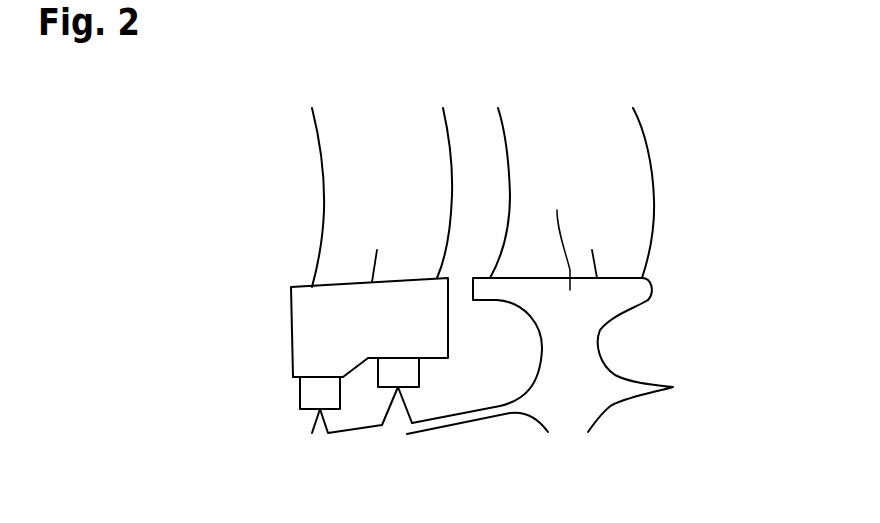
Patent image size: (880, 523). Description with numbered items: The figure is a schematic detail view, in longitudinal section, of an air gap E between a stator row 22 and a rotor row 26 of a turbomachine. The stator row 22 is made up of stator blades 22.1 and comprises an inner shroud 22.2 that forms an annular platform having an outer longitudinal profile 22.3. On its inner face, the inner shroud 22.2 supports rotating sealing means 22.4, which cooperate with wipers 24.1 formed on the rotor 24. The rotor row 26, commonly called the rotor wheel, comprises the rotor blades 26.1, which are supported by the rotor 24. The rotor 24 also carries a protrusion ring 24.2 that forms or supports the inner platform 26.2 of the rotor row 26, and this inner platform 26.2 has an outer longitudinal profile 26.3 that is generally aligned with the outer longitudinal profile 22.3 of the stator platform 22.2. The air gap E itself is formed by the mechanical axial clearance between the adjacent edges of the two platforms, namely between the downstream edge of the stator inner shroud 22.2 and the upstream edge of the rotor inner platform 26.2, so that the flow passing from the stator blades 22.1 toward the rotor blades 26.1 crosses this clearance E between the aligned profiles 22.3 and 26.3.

The stator row 22 is at (370, 105).
The stator blades 22.1 is at (378, 180).
The inner shroud 22.2 is at (315, 332).
The outer longitudinal profile 22.3 is at (372, 282).
The rotating sealing means 22.4 is at (387, 373).
The rotor 24 is at (463, 412).
The wipers 24.1 is at (398, 425).
The protrusion ring 24.2 is at (577, 355).
The rotor row 26 is at (571, 120).
The rotor blades 26.1 is at (598, 165).
The inner platform 26.2 is at (562, 235).
The outer longitudinal profile 26.3 is at (597, 278).
The air gap E is at (460, 263).